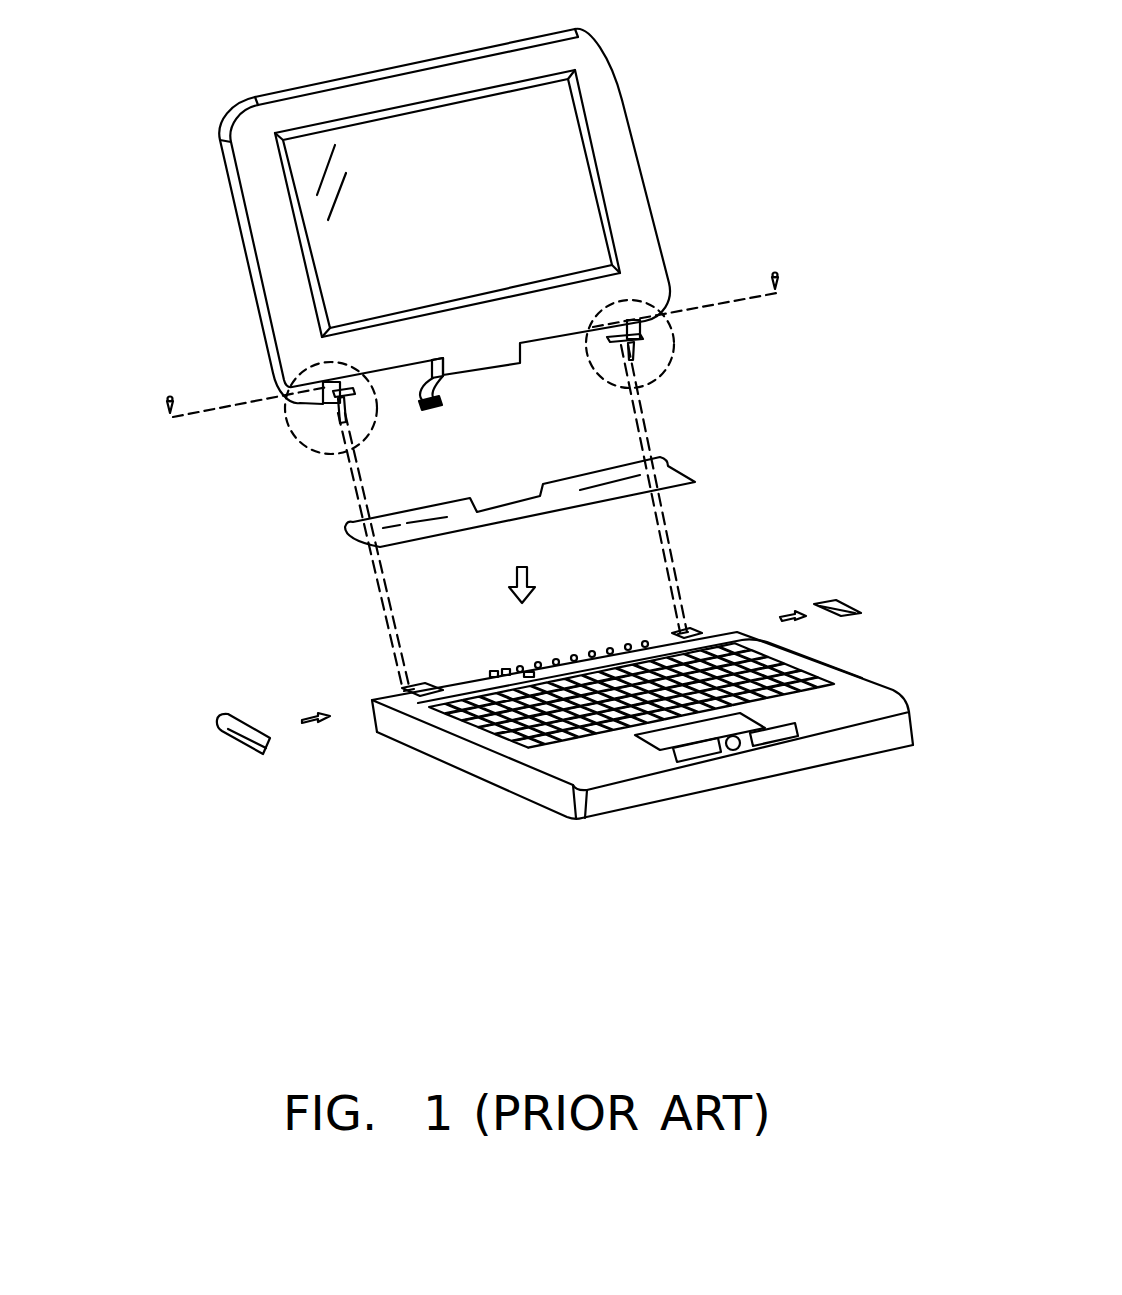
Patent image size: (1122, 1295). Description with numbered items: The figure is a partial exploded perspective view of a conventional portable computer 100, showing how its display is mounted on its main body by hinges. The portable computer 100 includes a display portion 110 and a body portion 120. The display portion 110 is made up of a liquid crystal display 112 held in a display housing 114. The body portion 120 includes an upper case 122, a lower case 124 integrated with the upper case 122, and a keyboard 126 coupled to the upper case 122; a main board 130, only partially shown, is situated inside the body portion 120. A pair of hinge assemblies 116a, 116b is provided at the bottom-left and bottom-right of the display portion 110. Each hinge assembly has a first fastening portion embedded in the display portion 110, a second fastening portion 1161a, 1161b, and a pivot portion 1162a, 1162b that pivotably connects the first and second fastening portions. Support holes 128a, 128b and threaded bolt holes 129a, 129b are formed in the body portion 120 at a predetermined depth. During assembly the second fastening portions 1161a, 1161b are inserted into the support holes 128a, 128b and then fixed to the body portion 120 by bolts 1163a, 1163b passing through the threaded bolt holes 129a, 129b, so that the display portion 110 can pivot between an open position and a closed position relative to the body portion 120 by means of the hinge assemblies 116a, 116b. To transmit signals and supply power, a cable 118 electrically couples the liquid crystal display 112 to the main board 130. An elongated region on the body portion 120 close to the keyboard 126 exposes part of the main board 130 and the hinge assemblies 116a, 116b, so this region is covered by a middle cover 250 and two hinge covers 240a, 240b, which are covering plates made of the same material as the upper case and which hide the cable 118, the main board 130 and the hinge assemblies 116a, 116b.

The portable computer 100 is at (260, 34).
The display portion 110 is at (461, 283).
The liquid crystal display (LCD) 112 is at (552, 123).
The display housing 114 is at (653, 210).
The hinge assembly 116a is at (673, 347).
The hinge assembly 116b is at (290, 426).
The cable 118 is at (445, 378).
The body portion 120 is at (594, 670).
The upper case 122 is at (880, 700).
The lower case 124 is at (850, 752).
The keyboard 126 is at (870, 703).
The support hole 128a is at (690, 637).
The support hole 128b is at (403, 693).
The threaded bolt hole 129a is at (683, 636).
The threaded bolt hole 129b is at (403, 692).
The main board 130 is at (604, 652).
The hinge cover 240a is at (840, 603).
The hinge cover 240b is at (233, 730).
The middle cover 250 is at (512, 510).
The second fastening portion 1161a is at (631, 354).
The second fastening portion 1161b is at (342, 412).
The pivot portion 1162a is at (640, 339).
The pivot portion 1162b is at (340, 396).
The bolt 1163a is at (774, 272).
The bolt 1163b is at (168, 396).